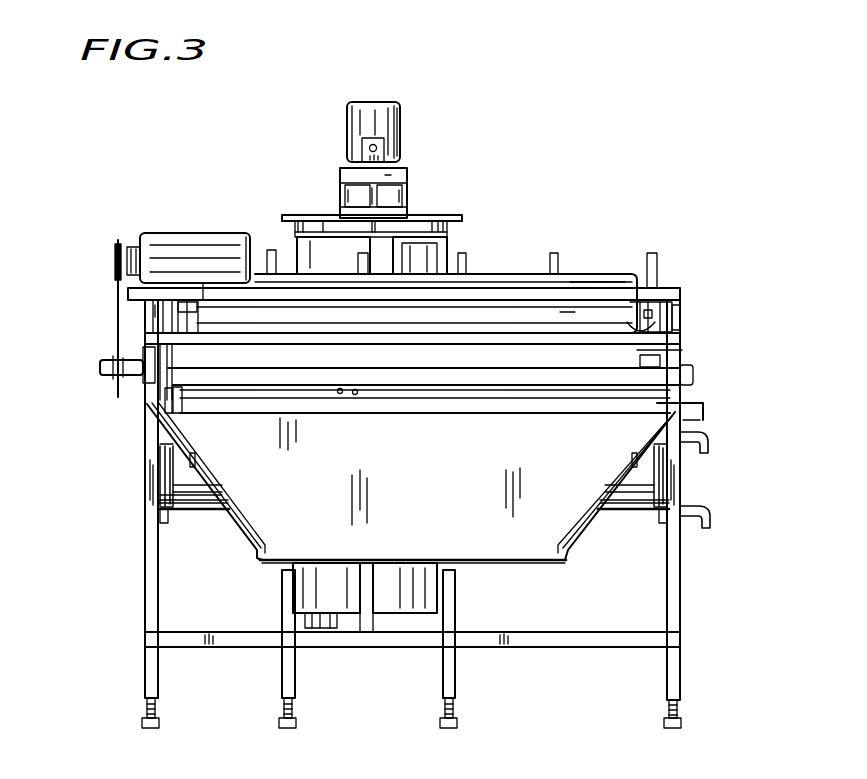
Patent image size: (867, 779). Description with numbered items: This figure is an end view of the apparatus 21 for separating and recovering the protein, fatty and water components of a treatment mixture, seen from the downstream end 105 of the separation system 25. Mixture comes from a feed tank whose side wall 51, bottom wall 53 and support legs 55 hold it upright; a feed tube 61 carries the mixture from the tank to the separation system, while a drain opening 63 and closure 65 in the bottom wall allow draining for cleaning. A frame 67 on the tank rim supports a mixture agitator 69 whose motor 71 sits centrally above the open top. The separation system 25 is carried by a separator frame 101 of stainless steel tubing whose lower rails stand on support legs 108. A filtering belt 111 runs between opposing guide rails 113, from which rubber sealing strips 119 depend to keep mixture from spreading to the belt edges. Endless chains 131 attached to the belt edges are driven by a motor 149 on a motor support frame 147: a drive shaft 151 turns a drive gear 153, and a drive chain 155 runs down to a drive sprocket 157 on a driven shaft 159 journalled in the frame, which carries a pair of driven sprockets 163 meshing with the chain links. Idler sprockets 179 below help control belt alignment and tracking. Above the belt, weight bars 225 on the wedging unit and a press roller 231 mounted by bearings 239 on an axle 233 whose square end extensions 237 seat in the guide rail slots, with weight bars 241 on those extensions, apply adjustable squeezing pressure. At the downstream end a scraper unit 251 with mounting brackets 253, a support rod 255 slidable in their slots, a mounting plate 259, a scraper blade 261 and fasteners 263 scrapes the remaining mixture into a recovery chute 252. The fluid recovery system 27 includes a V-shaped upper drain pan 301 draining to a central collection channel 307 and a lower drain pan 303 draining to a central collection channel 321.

The apparatus 21 is at (556, 97).
The separation system 25 is at (728, 395).
The fluid recovery system 27 is at (697, 490).
The side wall 51 is at (457, 270).
The bottom wall 53 is at (395, 615).
The support legs 55 is at (457, 655).
The feed tube 61 is at (425, 263).
The drain opening 63 is at (316, 632).
The closure 65 is at (328, 630).
The frame 67 is at (407, 168).
The mixture agitator 69 is at (400, 120).
The motor 71 is at (358, 102).
The separator frame 101 is at (682, 347).
The downstream end 105 is at (606, 295).
The support legs 108 is at (143, 680).
The filtering belt 111 is at (642, 362).
The guide rails 113 is at (165, 318).
The rubber sealing strips 119 is at (677, 347).
The endless chains 131 is at (165, 388).
The motor support frame 147 is at (592, 295).
The motor 149 is at (155, 233).
The drive shaft 151 is at (115, 262).
The drive gear 153 is at (114, 268).
The drive chain 155 is at (117, 300).
The drive sprocket 157 is at (120, 392).
The driven shaft 159 is at (102, 368).
The driven sprockets 163 is at (152, 400).
The idler sprockets 179 is at (160, 505).
The weight bars 225 is at (470, 282).
The press roller 231 is at (565, 313).
The axle 233 is at (640, 300).
The end extensions 237 is at (672, 300).
The bearings 239 is at (196, 322).
The weight bars 241 is at (637, 274).
The scraper unit 251 is at (263, 415).
The recovery chute 252 is at (253, 565).
The mounting brackets 253 is at (148, 412).
The support rod 255 is at (682, 454).
The mounting plate 259 is at (342, 395).
The scraper blade 261 is at (432, 395).
The fasteners 263 is at (357, 395).
The upper drain pan 301 is at (150, 455).
The lower drain pan 303 is at (612, 512).
The central collection channel 307 is at (674, 452).
The central collection channel 321 is at (200, 512).